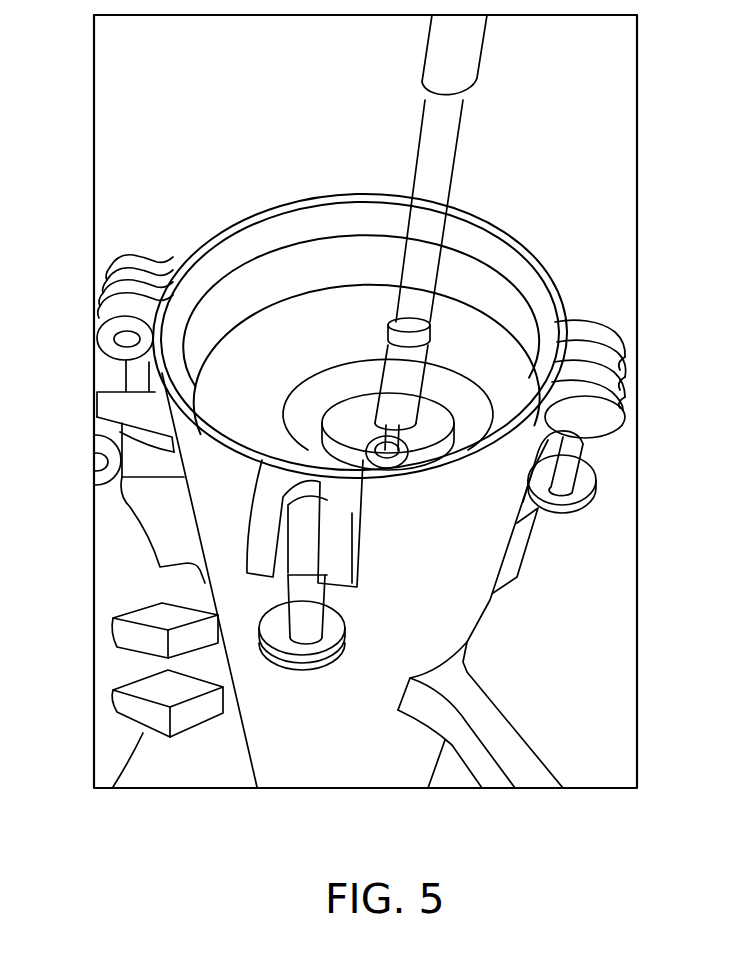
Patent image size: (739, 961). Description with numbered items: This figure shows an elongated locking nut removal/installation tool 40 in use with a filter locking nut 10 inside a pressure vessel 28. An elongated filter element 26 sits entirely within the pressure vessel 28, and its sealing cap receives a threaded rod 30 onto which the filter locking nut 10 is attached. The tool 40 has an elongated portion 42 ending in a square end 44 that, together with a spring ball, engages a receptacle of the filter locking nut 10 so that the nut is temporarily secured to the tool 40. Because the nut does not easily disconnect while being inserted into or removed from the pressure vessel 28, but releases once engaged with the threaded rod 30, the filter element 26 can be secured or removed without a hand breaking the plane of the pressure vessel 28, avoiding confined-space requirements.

The filter locking nut 10 is at (403, 355).
The elongated filter element 26 is at (465, 412).
The pressure vessel 28 is at (522, 289).
The threaded rod 30 is at (388, 447).
The elongated locking nut removal/installation tool 40 is at (448, 121).
The elongated portion 42 is at (440, 182).
The square end 44 is at (417, 308).